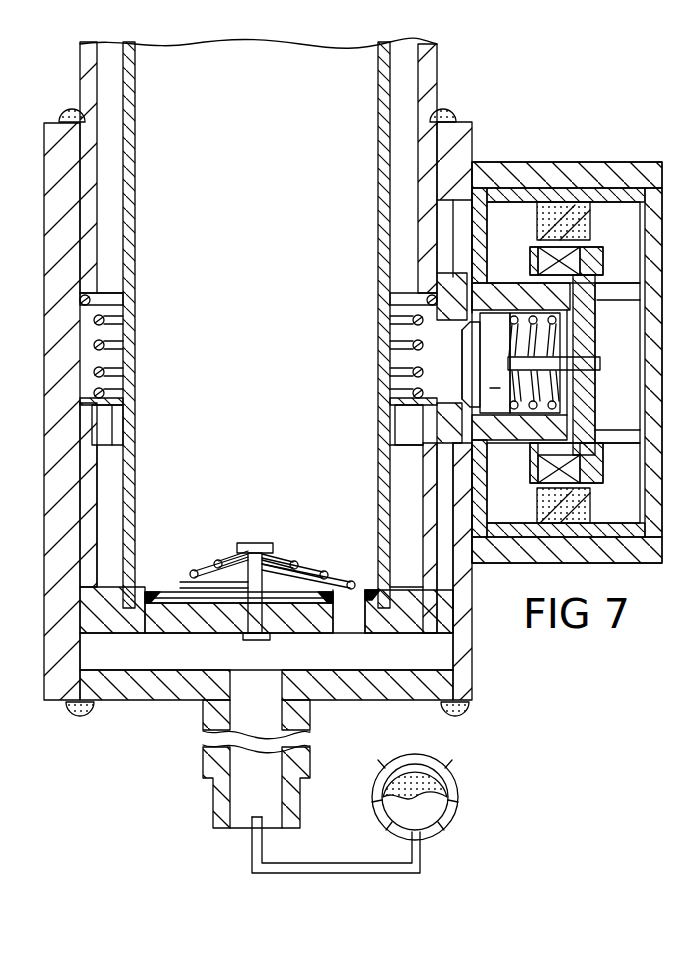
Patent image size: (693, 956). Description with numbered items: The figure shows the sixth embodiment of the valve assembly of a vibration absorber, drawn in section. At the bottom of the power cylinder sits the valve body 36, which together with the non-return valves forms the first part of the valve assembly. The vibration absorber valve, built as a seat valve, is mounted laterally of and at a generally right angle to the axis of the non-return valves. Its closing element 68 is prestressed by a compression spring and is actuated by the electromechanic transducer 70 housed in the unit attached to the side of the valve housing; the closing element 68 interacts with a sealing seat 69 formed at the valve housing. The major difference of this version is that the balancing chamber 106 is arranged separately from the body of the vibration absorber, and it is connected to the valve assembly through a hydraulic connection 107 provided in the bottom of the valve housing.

The valve body 36 is at (210, 615).
The closing element 68 is at (470, 367).
The sealing seat 69 is at (464, 320).
The electromechanic transducer 70 is at (482, 330).
The balancing chamber 106 is at (427, 812).
The hydraulic connection 107 is at (300, 762).